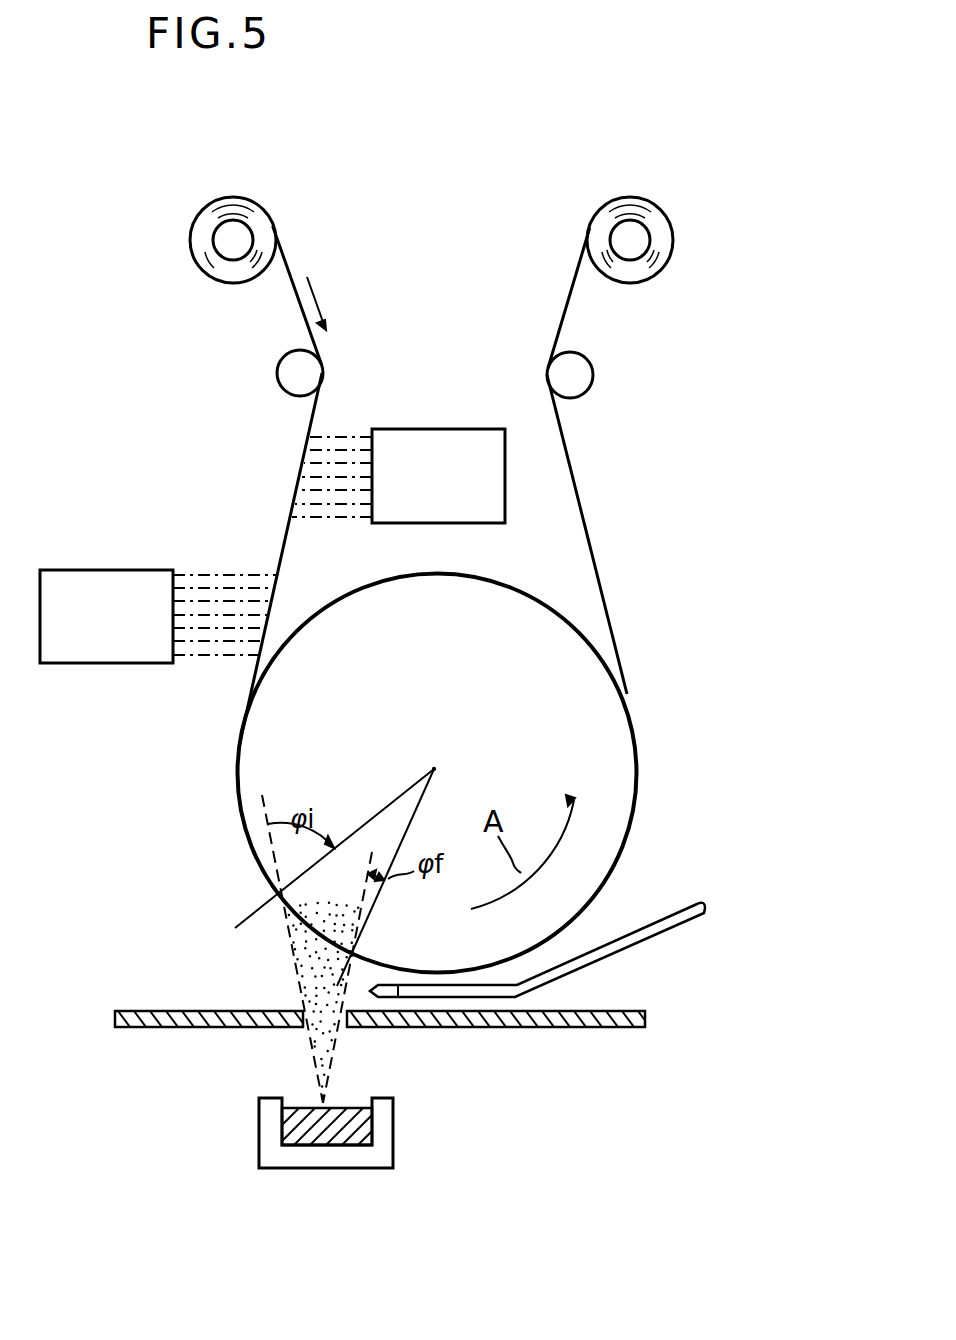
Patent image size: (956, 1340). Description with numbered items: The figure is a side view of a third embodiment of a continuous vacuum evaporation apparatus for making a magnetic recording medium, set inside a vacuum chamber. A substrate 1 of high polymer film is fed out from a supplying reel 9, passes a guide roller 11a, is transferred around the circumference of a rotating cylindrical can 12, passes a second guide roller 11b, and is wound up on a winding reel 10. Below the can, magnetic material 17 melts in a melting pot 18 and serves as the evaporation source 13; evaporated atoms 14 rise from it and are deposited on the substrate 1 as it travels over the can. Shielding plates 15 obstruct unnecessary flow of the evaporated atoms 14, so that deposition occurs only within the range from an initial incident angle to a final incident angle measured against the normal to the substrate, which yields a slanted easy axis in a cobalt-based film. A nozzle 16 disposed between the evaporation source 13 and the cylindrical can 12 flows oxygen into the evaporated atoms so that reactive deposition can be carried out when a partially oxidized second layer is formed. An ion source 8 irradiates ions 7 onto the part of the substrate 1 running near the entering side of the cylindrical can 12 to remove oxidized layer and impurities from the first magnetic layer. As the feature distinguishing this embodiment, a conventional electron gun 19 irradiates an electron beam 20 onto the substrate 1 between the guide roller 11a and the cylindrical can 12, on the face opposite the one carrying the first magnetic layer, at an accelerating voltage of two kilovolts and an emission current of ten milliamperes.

The substrate 1 is at (574, 490).
The ions 7 is at (214, 572).
The ion source 8 is at (102, 665).
The supplying reel 9 is at (243, 230).
The winding reel 10 is at (636, 228).
The guide roller 11a is at (285, 377).
The guide roller 11b is at (586, 378).
The cylindrical can 12 is at (630, 818).
The evaporation source 13 is at (403, 1173).
The evaporated atoms 14 is at (325, 1055).
The shielding plates 15 is at (140, 1028).
The nozzle 16 is at (682, 920).
The magnetic material 17 is at (305, 1146).
The melting pot 18 is at (390, 1125).
The electron gun 19 is at (468, 429).
The electron beam 20 is at (313, 437).